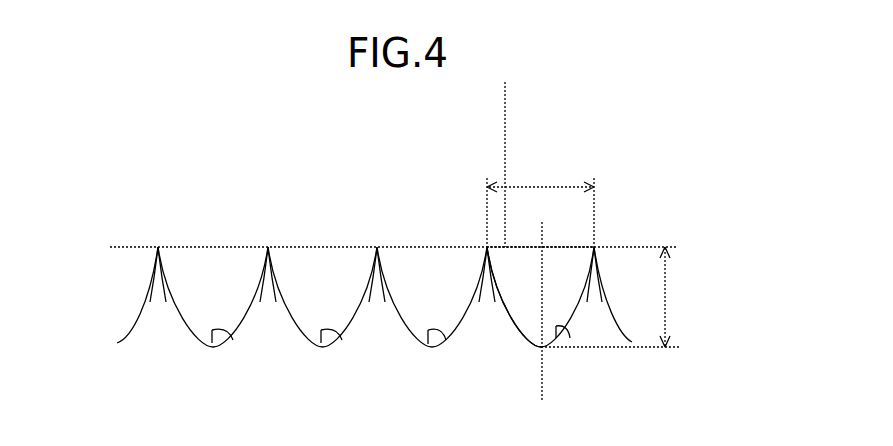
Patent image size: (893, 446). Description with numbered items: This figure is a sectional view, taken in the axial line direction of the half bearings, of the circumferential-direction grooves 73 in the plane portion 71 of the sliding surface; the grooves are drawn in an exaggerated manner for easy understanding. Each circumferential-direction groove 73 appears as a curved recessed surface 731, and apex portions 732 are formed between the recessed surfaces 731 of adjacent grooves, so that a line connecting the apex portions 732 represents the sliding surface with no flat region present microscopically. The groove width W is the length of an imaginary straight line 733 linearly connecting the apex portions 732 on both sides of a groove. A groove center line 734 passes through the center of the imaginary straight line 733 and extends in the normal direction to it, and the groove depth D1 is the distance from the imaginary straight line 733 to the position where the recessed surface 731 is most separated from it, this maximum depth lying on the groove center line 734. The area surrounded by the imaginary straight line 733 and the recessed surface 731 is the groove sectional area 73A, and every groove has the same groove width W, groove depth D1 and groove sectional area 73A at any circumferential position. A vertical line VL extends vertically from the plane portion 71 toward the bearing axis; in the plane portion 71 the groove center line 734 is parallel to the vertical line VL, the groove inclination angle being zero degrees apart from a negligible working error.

The circumferential-direction groove 73 is at (188, 290).
The plane portion 71 is at (326, 247).
The apex portion 732 is at (158, 247).
The recessed surface 731 is at (233, 340).
The groove sectional area 73A is at (517, 302).
The imaginary straight line 733 is at (513, 247).
The groove center line 734 is at (543, 373).
The vertical line VL is at (505, 130).
The groove width W is at (540, 204).
The groove depth D1 is at (620, 297).